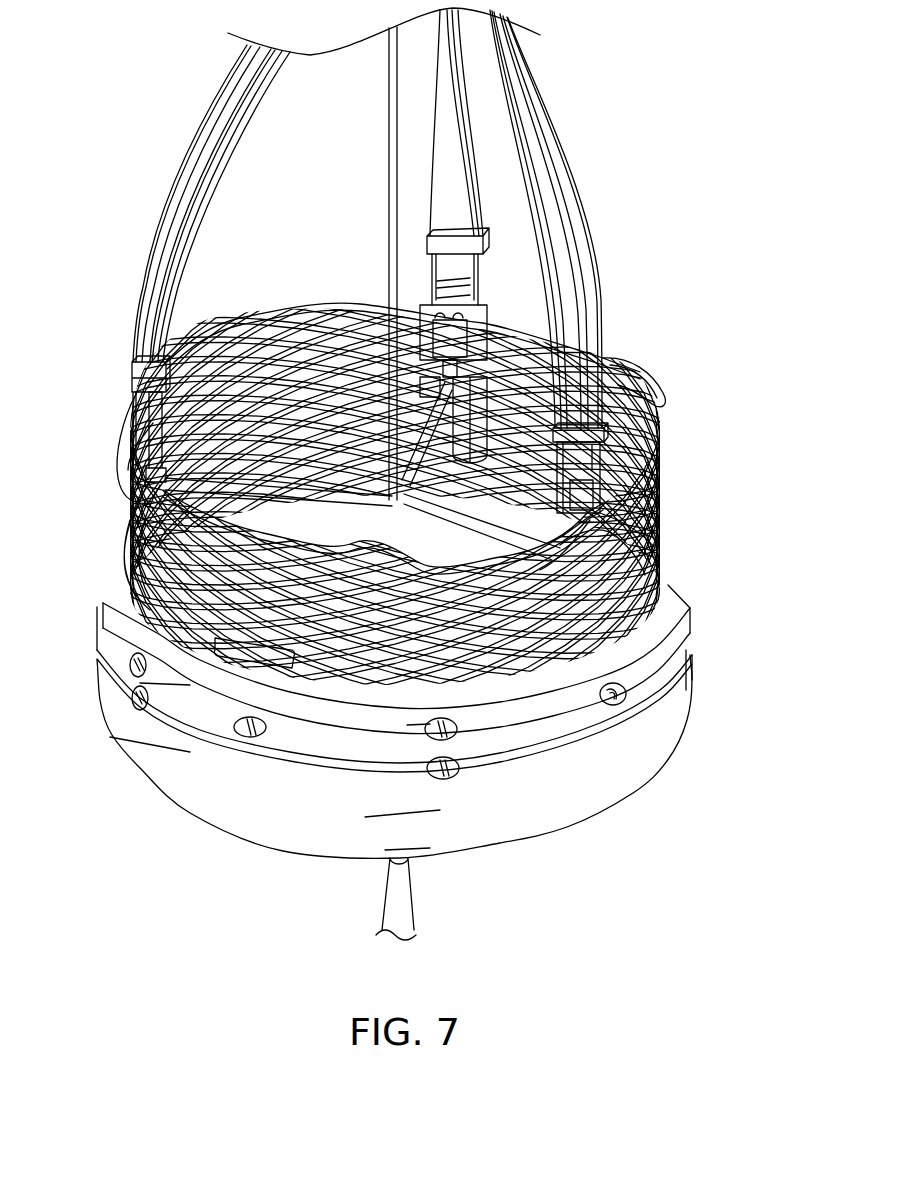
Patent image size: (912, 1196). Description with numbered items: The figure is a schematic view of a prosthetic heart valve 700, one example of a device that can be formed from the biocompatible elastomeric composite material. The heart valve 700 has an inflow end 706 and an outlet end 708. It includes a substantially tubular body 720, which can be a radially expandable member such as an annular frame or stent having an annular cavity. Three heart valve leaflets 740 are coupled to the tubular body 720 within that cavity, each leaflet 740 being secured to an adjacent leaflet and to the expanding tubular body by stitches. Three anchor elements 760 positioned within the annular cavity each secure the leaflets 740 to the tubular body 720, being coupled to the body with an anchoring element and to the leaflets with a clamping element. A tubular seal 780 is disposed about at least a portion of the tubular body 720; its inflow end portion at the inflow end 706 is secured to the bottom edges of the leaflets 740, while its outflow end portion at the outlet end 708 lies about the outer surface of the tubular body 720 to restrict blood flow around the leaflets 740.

The prosthetic heart valve 700 is at (148, 97).
The inflow end 706 is at (185, 812).
The outlet end 708 is at (270, 313).
The tubular body 720 is at (667, 407).
The leaflets 740 is at (153, 614).
The anchor elements 760 is at (385, 306).
The tubular seal 780 is at (300, 822).